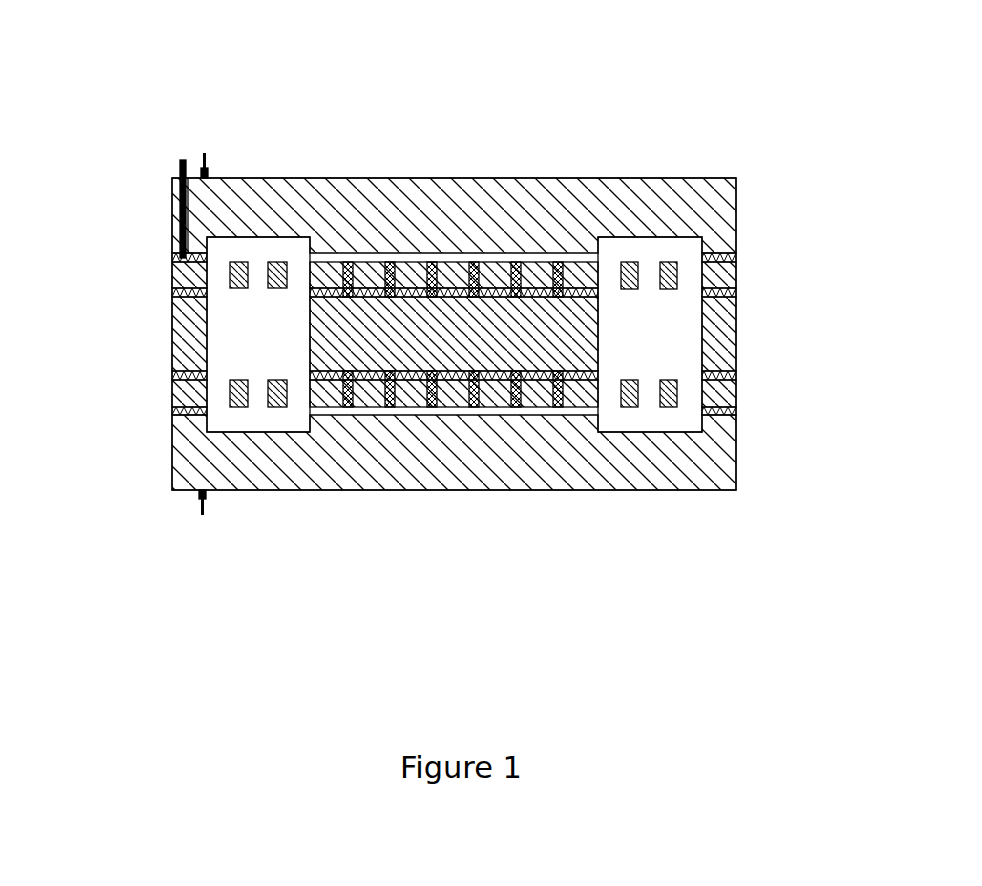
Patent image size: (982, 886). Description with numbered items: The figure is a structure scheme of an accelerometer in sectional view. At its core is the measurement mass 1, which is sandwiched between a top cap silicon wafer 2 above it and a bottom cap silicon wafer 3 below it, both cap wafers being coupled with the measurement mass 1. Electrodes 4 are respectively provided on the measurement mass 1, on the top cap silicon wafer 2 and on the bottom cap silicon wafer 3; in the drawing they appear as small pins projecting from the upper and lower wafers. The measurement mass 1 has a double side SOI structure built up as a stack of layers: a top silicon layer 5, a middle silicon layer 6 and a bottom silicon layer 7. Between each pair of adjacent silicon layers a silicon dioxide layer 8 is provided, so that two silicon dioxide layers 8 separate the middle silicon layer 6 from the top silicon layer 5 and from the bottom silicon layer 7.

The measurement mass 1 is at (457, 332).
The top cap silicon wafer 2 is at (388, 148).
The bottom cap silicon wafer 3 is at (421, 534).
The electrodes 4 is at (183, 158).
The top silicon layer 5 is at (736, 261).
The middle silicon layer 6 is at (736, 335).
The bottom silicon layer 7 is at (736, 409).
The silicon dioxide layers 8 is at (736, 288).